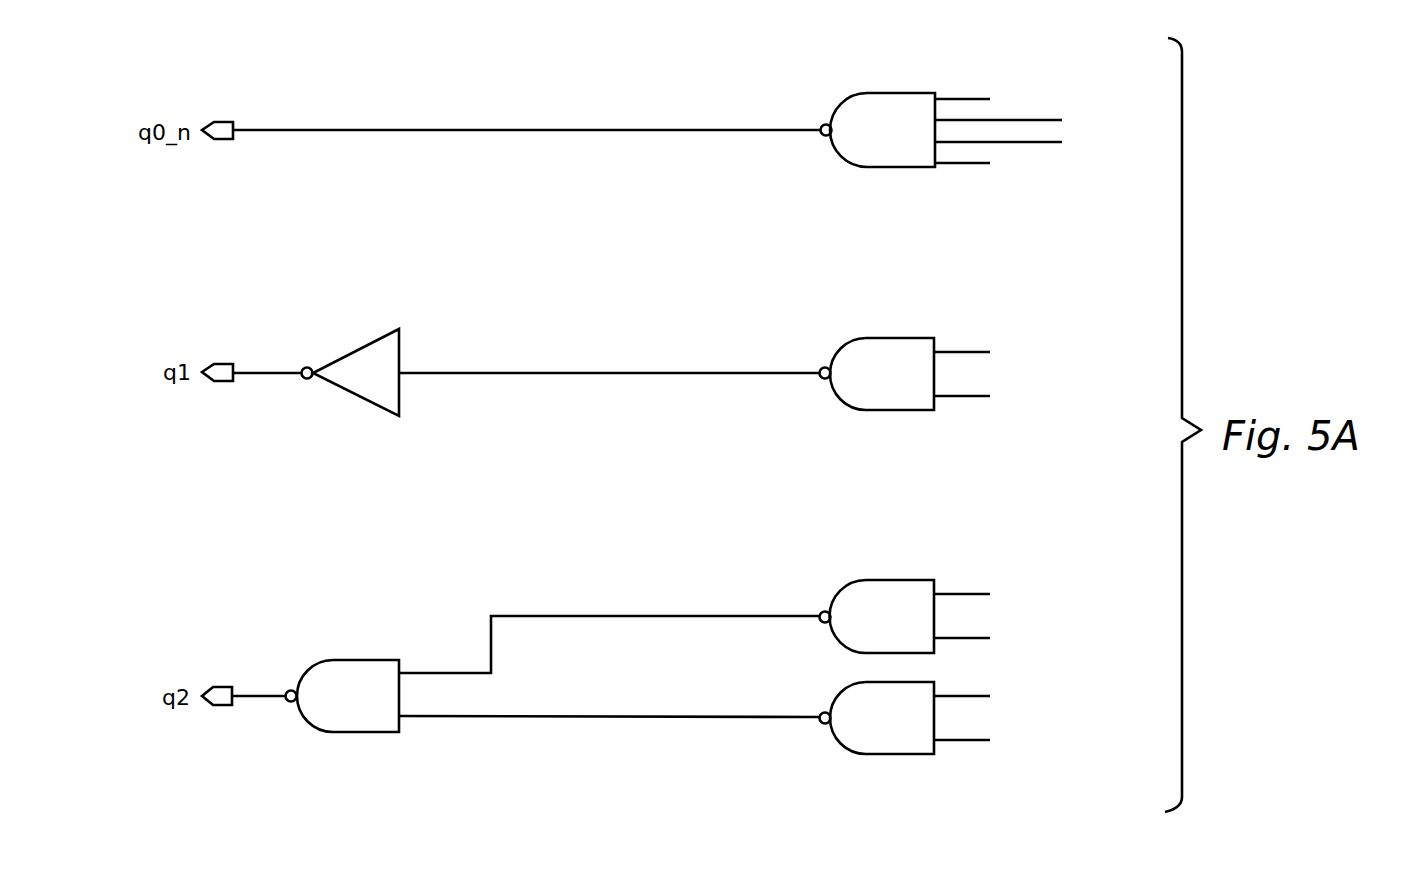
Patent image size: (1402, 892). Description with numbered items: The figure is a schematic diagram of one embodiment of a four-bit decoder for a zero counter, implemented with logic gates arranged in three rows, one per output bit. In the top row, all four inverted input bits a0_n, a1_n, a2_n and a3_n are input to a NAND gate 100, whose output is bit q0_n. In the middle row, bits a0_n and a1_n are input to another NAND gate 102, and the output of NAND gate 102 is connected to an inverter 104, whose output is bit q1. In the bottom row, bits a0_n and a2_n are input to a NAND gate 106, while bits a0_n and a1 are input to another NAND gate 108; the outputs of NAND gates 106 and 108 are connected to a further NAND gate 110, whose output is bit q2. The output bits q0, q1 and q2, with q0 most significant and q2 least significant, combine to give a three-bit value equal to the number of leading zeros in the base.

The NAND gate 100 is at (908, 93).
The NAND gate 102 is at (907, 338).
The inverter 104 is at (352, 348).
The NAND gate 106 is at (907, 580).
The NAND gate 108 is at (907, 754).
The NAND gate 110 is at (370, 660).